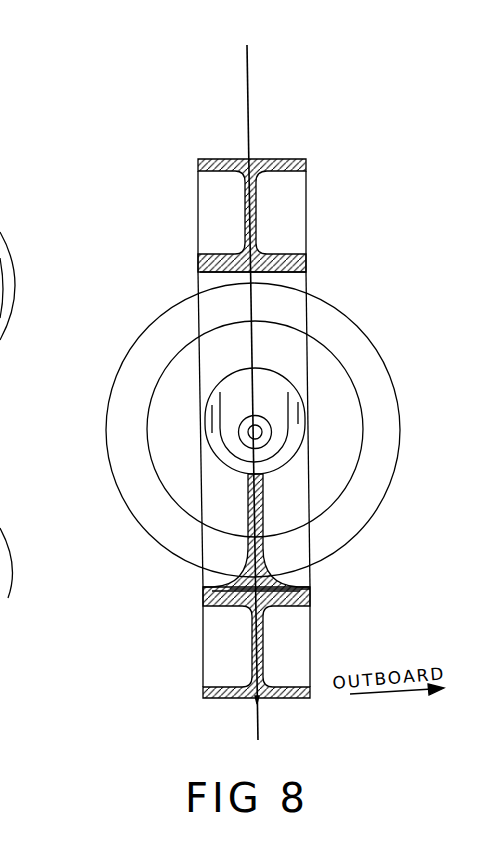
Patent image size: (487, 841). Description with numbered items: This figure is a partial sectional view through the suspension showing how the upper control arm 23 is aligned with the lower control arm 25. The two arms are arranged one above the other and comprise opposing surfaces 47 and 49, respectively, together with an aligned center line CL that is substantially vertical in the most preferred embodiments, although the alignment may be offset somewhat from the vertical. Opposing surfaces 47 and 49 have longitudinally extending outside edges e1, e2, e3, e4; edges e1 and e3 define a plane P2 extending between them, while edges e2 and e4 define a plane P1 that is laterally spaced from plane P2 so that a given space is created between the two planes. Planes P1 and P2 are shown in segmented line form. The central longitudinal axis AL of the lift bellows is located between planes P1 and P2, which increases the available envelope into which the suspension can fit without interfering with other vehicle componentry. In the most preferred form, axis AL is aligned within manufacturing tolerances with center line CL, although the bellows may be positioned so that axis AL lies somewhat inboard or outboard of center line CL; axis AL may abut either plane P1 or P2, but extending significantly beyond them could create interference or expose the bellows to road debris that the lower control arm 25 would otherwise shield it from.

The upper control arm 23 is at (236, 227).
The lower control arm 25 is at (240, 663).
The opposing surface 47 is at (300, 286).
The opposing surface 49 is at (311, 577).
The outside edge e1 is at (199, 262).
The outside edge e2 is at (306, 263).
The outside edge e3 is at (203, 598).
The outside edge e4 is at (312, 594).
The plane P1 is at (307, 368).
The plane P2 is at (200, 383).
The central longitudinal axis AL is at (262, 432).
The center line CL is at (248, 72).